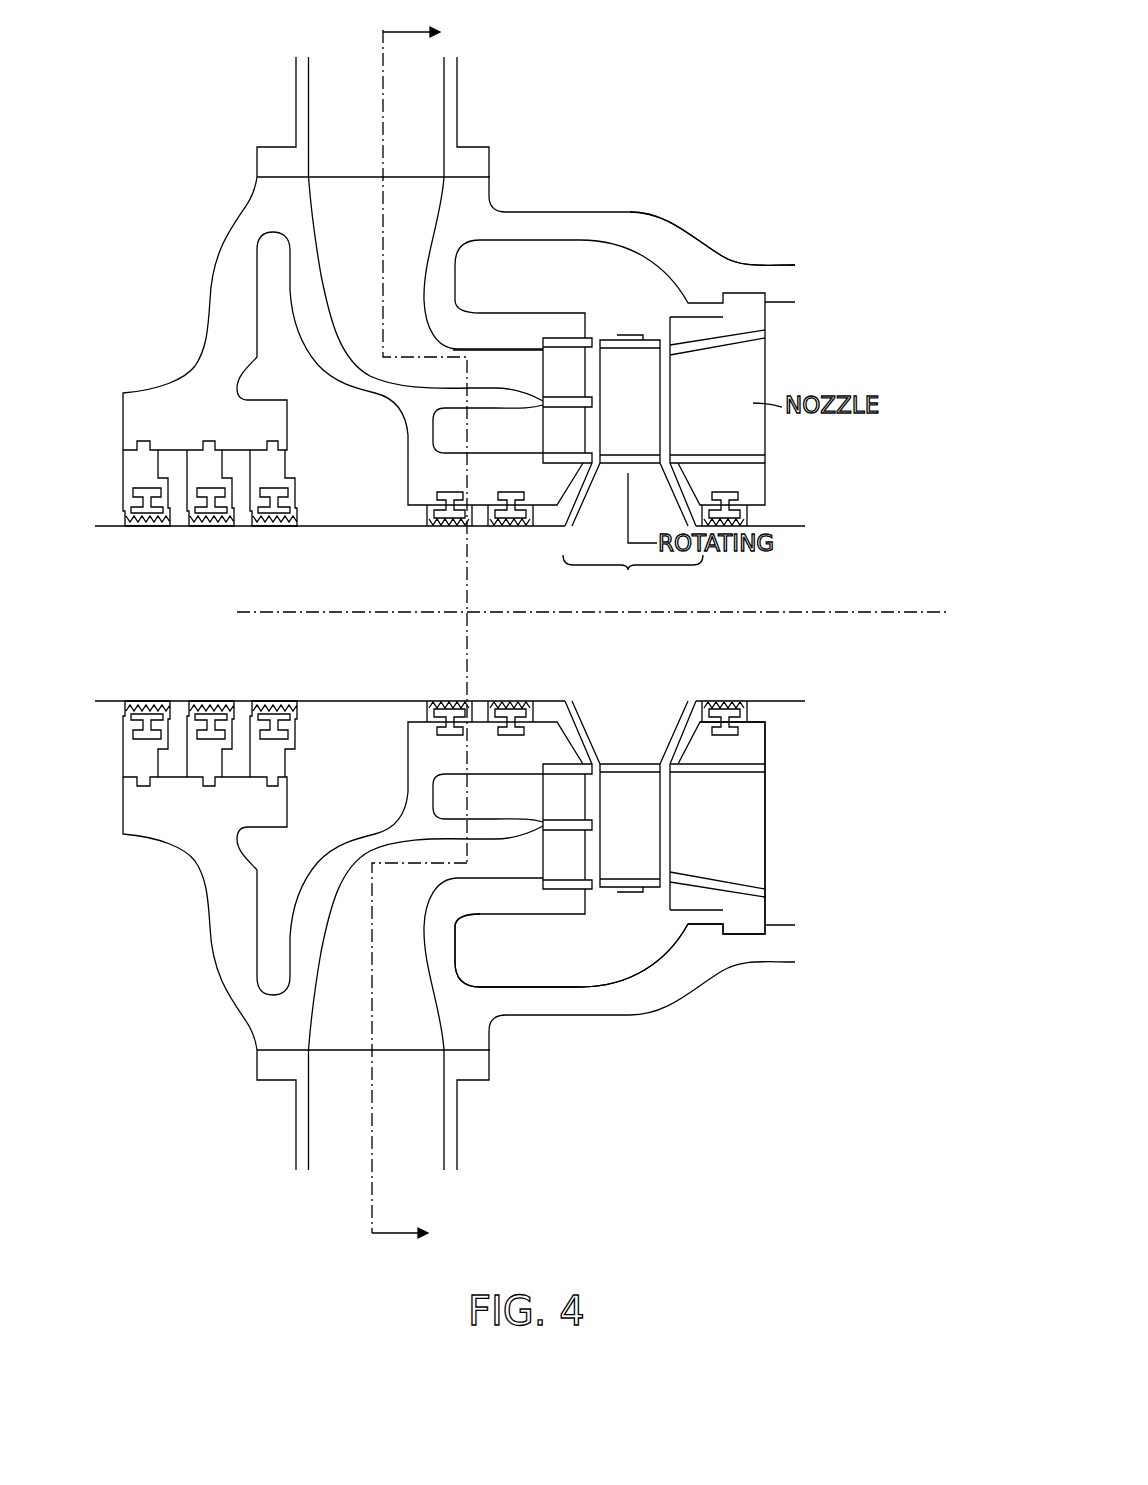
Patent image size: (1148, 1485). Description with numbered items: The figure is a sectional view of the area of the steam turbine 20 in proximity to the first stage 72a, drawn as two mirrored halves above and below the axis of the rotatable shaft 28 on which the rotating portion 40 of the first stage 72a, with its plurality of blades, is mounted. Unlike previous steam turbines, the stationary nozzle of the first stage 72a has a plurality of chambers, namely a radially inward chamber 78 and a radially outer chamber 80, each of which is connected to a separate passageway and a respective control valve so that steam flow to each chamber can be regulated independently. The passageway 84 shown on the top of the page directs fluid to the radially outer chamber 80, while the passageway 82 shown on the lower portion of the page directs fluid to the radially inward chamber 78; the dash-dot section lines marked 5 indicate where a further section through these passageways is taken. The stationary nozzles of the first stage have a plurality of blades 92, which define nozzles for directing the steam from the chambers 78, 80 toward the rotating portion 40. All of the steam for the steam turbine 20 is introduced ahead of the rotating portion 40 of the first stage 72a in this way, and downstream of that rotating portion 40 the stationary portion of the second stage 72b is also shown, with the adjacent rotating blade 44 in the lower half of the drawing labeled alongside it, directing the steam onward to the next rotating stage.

The steam turbine 20 is at (870, 291).
The rotatable shaft 28 is at (575, 613).
The rotating portion 40 is at (632, 345).
The second stage rotor blade 44 is at (637, 790).
The first stage 72a is at (630, 963).
The second stage 72b is at (732, 963).
The radially inward chamber 78 is at (520, 442).
The radially outer chamber 80 is at (503, 365).
The passageway 82 is at (410, 1168).
The passageway 84 is at (346, 57).
The blades 92 is at (563, 363).
The section view indicator 5 is at (413, 634).